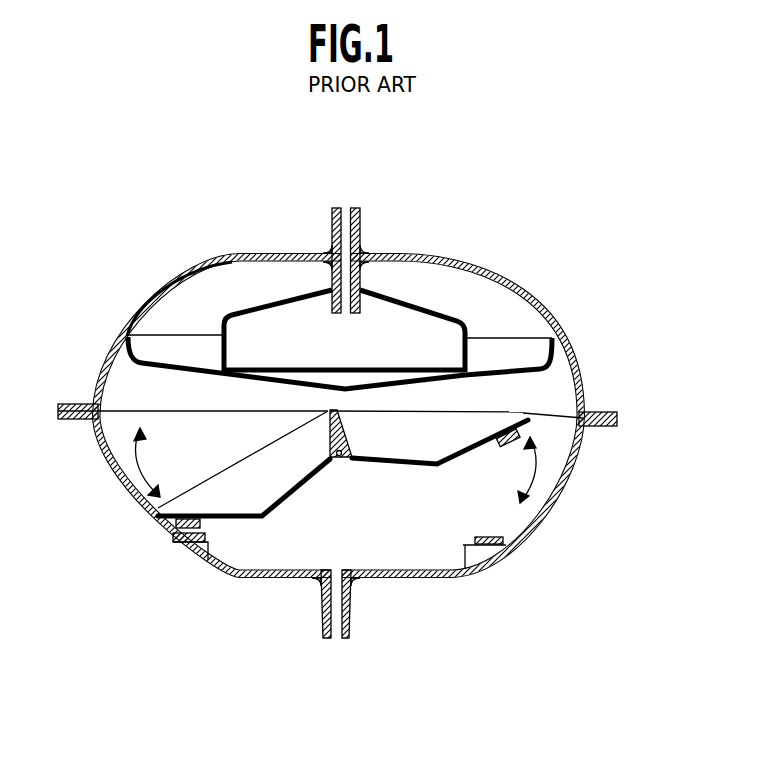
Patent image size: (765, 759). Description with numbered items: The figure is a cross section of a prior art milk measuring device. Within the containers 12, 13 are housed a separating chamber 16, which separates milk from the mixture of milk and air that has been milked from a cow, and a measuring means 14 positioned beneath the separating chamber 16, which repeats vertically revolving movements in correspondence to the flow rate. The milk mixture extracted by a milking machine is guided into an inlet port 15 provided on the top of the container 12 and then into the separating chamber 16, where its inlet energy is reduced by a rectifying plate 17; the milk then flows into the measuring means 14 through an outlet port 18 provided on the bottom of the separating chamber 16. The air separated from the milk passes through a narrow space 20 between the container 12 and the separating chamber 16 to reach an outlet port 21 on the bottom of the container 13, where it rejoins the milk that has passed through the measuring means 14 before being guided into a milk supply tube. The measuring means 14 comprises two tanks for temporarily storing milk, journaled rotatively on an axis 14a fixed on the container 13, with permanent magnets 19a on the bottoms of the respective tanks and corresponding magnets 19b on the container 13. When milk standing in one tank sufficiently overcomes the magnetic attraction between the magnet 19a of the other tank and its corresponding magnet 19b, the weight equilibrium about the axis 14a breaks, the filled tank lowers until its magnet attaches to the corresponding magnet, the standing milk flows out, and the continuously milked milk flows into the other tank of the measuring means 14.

The container 12 is at (563, 333).
The container 13 is at (585, 463).
The measuring means 14 is at (236, 454).
The axis 14a is at (340, 460).
The inlet port 15 is at (347, 207).
The separating chamber 16 is at (425, 322).
The rectifying plate 17 is at (257, 366).
The outlet port 18 is at (343, 390).
The permanent magnets 19a is at (205, 523).
The magnets 19b is at (173, 537).
The narrow space 20 is at (152, 318).
The outlet port 21 is at (342, 630).